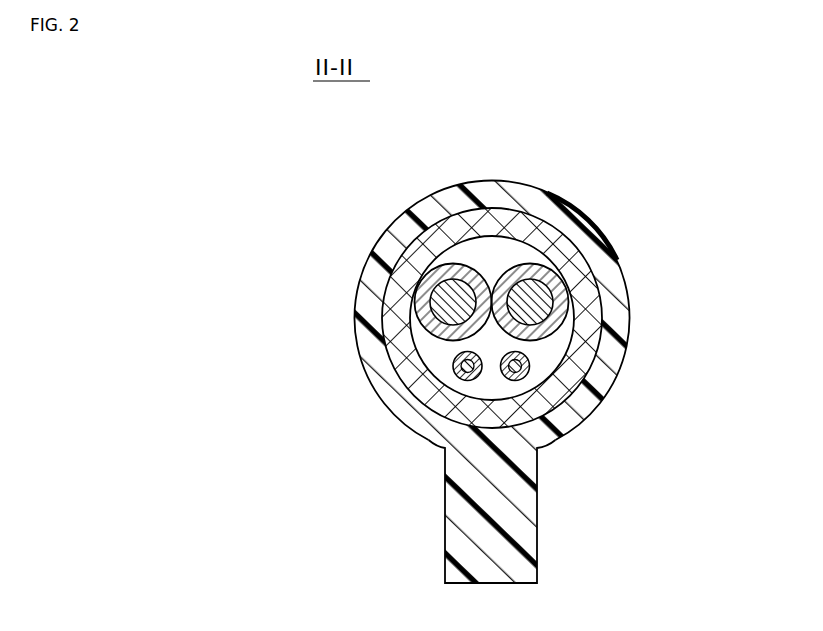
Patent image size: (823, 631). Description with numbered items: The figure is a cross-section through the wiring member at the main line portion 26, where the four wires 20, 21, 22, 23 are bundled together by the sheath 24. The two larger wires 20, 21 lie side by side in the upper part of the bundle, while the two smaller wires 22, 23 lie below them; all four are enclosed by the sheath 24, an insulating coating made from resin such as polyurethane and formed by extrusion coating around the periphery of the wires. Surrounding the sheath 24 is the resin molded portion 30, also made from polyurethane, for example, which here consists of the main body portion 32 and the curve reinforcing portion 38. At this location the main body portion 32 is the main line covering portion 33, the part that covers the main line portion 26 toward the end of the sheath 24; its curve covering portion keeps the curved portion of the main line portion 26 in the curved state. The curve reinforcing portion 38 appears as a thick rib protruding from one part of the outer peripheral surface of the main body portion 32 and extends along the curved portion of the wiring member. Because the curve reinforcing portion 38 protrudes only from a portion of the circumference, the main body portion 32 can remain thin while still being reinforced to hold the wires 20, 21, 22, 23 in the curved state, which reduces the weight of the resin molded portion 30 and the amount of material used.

The resin molded portion 30 is at (506, 168).
The wire 20 is at (452, 264).
The wire 21 is at (523, 264).
The wire 22 is at (460, 374).
The wire 23 is at (524, 375).
The sheath 24 is at (603, 397).
The main line portion 26 is at (570, 345).
The main body portion 32 is at (600, 230).
The main line covering portion 33 is at (620, 262).
The curve reinforcing portion 38 is at (538, 545).